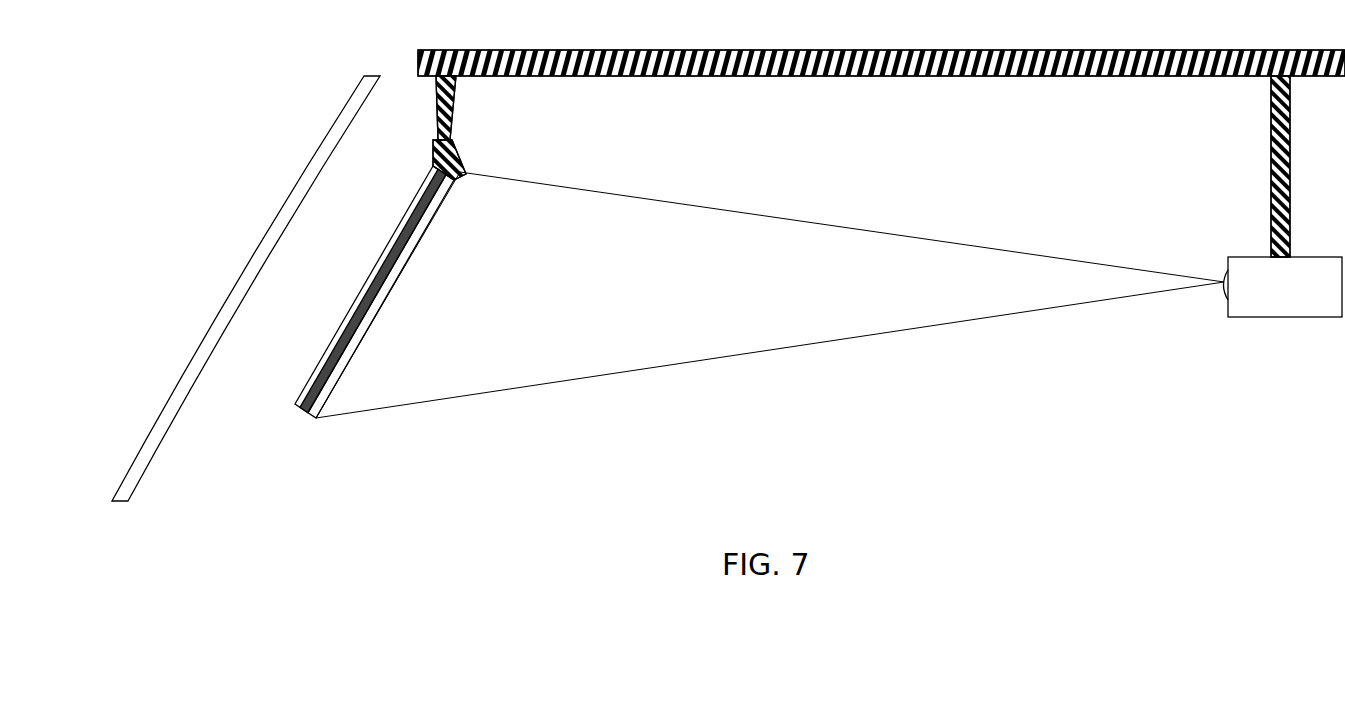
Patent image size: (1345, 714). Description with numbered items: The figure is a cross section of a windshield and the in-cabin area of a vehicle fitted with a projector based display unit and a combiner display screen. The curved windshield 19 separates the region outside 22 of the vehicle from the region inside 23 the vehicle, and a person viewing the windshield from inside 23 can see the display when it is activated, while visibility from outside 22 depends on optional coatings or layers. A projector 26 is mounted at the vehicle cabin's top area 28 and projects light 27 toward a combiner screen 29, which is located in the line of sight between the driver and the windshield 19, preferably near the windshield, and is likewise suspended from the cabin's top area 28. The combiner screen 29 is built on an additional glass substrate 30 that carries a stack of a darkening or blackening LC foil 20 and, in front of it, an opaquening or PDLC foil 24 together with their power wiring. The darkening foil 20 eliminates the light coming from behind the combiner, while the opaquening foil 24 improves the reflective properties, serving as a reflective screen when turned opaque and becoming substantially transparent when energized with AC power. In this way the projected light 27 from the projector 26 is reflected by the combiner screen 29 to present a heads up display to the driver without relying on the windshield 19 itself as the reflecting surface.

The windshield 19 is at (173, 421).
The darkening foil 20 is at (305, 412).
The outside of the vehicle 22 is at (148, 256).
The inside of the vehicle 23 is at (302, 256).
The opaquening foil 24 is at (314, 417).
The projector 26 is at (1283, 196).
The light 27 is at (770, 295).
The vehicle cabin's top area 28 is at (881, 63).
The combiner screen 29 is at (530, 171).
The additional glass substrate 30 is at (293, 408).